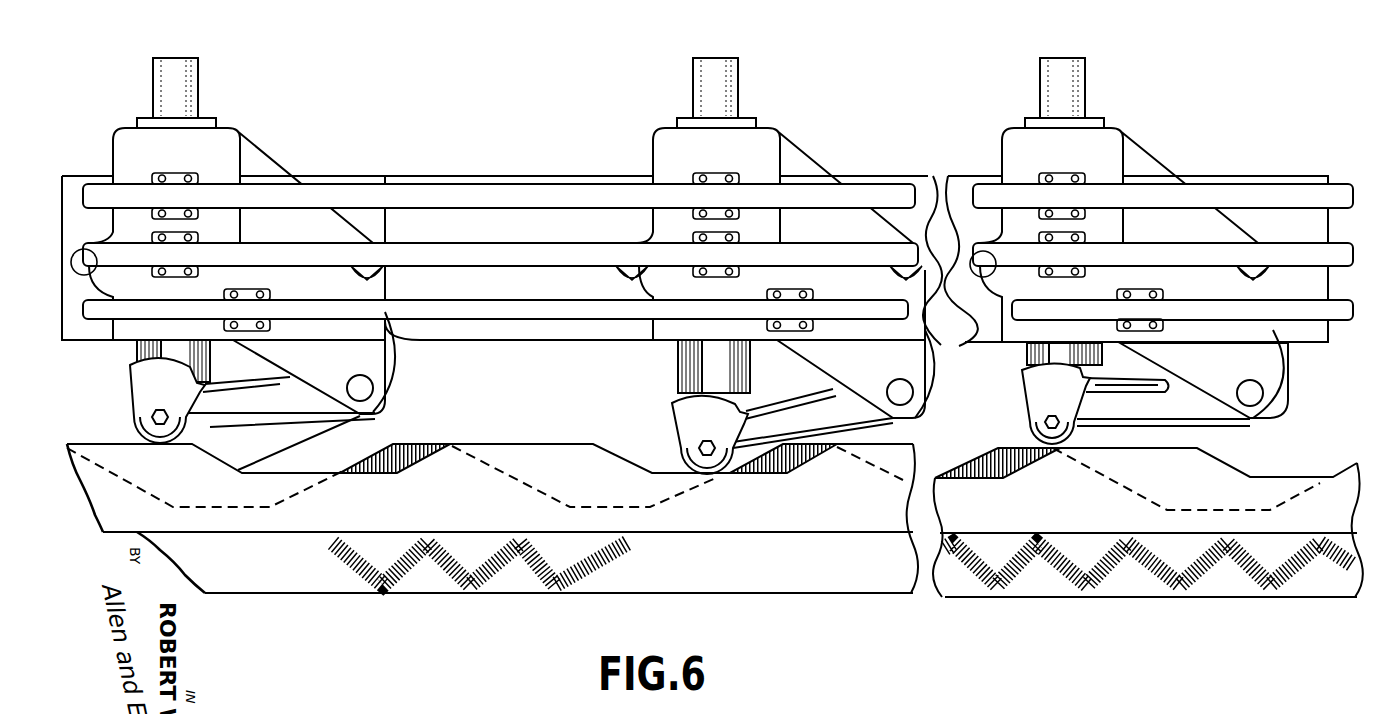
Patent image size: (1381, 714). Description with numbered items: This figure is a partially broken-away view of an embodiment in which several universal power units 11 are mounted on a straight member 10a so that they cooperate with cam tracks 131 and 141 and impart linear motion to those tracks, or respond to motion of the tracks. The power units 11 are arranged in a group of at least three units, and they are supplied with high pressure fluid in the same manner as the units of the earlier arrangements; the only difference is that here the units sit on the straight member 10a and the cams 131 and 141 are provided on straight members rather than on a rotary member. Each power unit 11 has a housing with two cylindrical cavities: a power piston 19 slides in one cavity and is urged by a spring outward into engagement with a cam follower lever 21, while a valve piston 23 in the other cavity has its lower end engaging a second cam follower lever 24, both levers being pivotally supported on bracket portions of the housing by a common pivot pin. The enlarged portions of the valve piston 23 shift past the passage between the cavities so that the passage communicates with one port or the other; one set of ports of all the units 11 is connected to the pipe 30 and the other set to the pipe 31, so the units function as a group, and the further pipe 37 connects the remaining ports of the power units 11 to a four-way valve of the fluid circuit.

The straight member 10a is at (443, 175).
The power unit 11 is at (258, 150).
The pipe 30 is at (500, 206).
The pipe 31 is at (492, 263).
The pipe 37 is at (504, 316).
The power piston 19 is at (135, 353).
The valve piston 23 is at (207, 352).
The cam follower lever 21 is at (305, 428).
The cam follower lever 24 is at (147, 392).
The cam track 131 is at (465, 433).
The cam track 141 is at (563, 444).